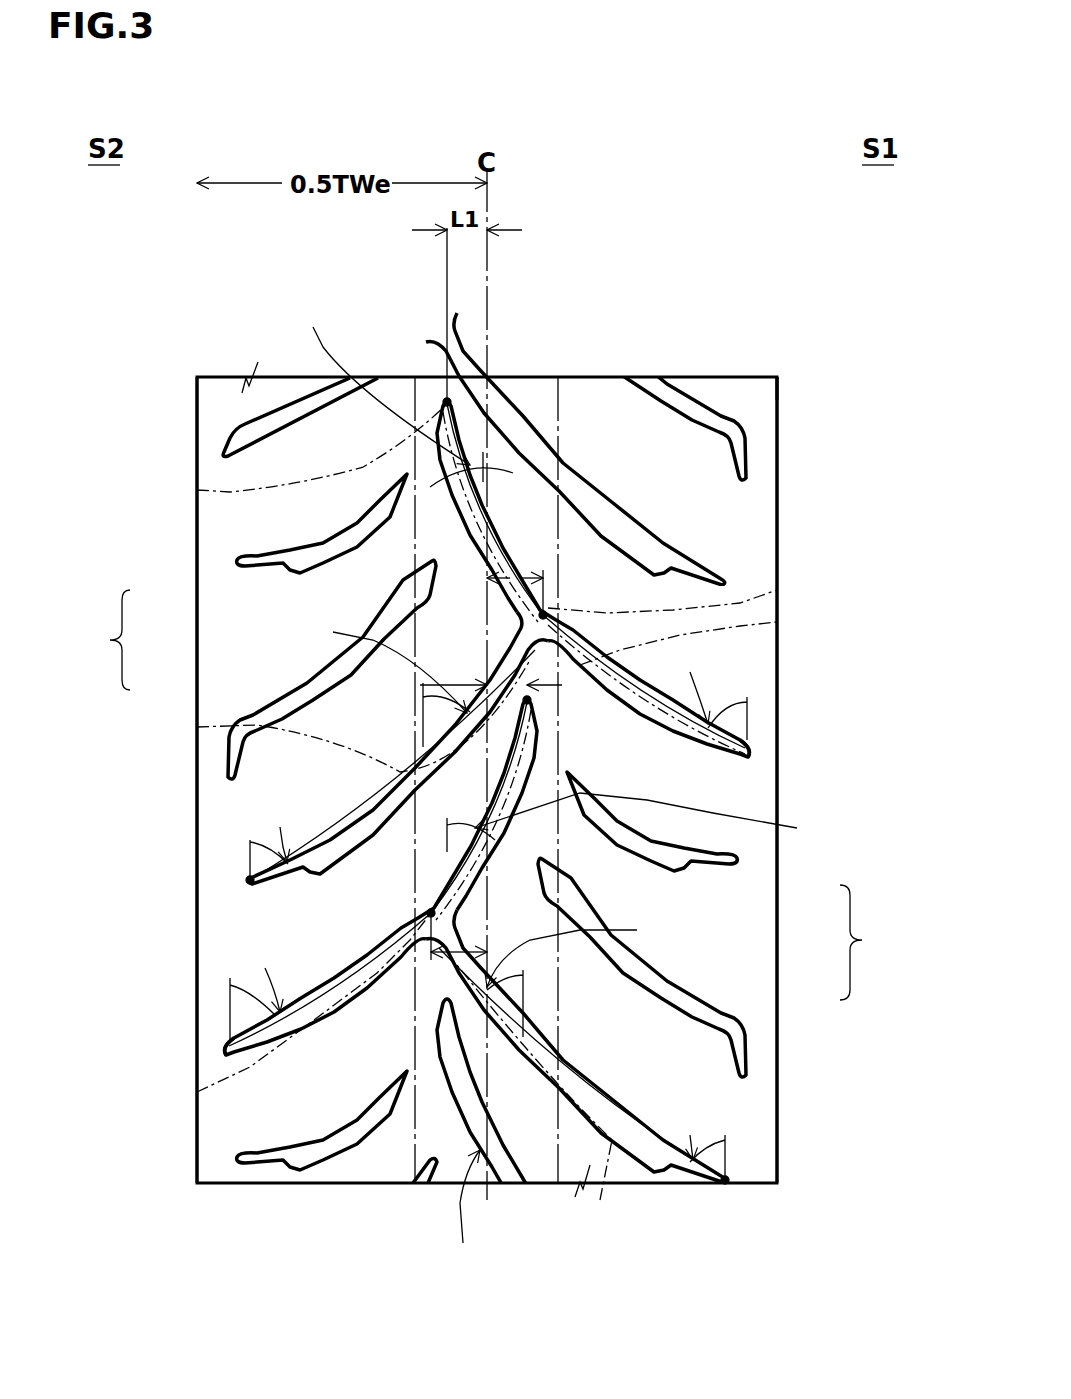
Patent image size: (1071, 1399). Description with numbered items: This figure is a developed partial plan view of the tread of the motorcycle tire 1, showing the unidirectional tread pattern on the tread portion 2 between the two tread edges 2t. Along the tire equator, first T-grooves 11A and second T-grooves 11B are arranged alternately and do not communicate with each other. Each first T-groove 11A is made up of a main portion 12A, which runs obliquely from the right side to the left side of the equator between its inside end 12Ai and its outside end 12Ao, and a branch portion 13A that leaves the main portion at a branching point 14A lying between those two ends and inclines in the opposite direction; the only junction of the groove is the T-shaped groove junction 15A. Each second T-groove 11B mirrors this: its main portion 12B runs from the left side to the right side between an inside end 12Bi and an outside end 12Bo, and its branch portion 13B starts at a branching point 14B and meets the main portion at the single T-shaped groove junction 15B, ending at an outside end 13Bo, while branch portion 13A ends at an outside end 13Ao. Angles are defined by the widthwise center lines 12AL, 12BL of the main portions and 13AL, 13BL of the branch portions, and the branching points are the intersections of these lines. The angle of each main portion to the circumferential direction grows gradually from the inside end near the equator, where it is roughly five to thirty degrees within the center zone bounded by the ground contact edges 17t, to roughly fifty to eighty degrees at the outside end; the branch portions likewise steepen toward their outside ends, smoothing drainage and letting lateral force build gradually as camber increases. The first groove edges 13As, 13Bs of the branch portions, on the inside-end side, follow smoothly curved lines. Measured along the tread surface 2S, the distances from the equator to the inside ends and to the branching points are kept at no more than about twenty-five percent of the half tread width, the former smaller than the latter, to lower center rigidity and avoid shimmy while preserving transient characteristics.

The motorcycle tire 1 is at (735, 325).
The tread portion 2 is at (487, 753).
The tread surface 2S is at (597, 443).
The tread edges 2t is at (197, 440).
The first T-grooves 11A is at (508, 1004).
The second T-grooves 11B is at (485, 579).
The main portion of first T-groove 12A is at (507, 830).
The inside end of main portion 12Ai is at (533, 703).
The outside end of main portion 12Ao is at (223, 1046).
The center line of first main lateral groove 12AL is at (197, 1092).
The main portion of second T-groove 12B is at (463, 522).
The inside end of main portion 12Bi is at (445, 398).
The outside end of main portion 12Bo is at (752, 750).
The center line of second main lateral groove 12BL is at (777, 623).
The branch portion of first T-groove 13A is at (607, 500).
The outside end of branch portion 13Ao is at (727, 1182).
The center line of first branch lateral groove 13AL is at (605, 1195).
The first groove edge of branch portion 13As is at (613, 1105).
The branch portion of second T-groove 13B is at (398, 773).
The outside end of branch portion 13Bo is at (250, 880).
The center line of second branch lateral groove 13BL is at (197, 727).
The first groove edge of branch portion 13Bs is at (388, 792).
The branching point 14A is at (367, 1111).
The groove junction 15A is at (431, 913).
The branching point 14B is at (554, 442).
The groove junction 15B is at (543, 615).
The ground contact edges 17t is at (230, 492).